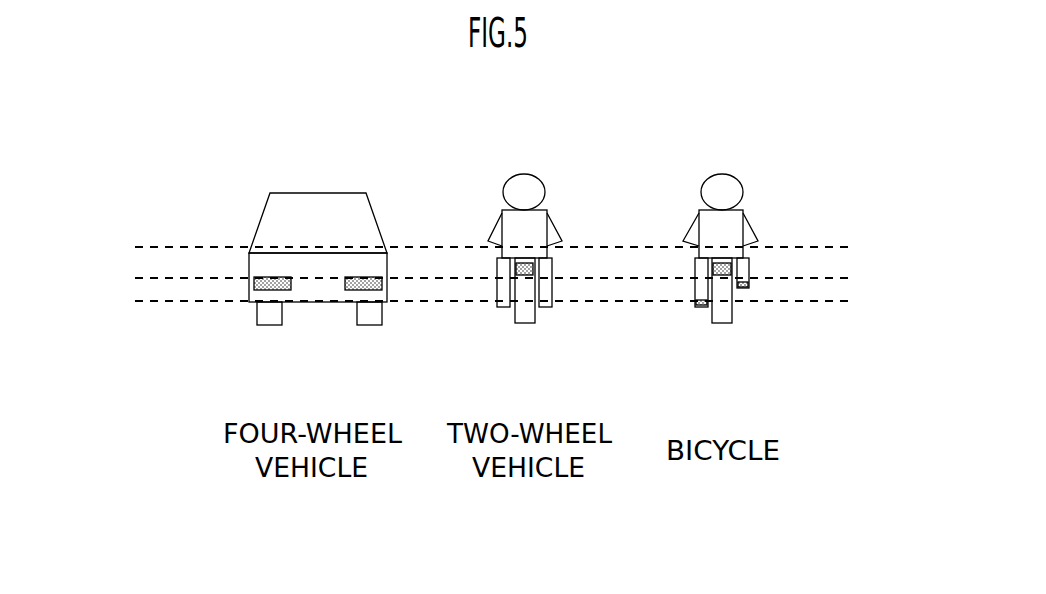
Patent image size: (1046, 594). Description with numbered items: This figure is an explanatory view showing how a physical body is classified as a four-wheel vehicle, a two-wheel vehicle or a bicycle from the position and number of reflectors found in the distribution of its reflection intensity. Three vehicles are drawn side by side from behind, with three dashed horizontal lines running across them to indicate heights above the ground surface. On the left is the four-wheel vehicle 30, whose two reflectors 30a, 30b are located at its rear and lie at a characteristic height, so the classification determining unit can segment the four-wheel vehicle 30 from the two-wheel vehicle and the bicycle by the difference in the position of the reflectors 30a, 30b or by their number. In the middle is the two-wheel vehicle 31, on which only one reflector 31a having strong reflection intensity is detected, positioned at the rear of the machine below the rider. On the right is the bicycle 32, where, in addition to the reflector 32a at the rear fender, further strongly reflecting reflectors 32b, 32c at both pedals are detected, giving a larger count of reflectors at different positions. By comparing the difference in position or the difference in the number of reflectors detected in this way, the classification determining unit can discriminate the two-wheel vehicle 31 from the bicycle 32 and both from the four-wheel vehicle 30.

The four-wheel vehicle 30 is at (321, 205).
The reflector 30a is at (253, 289).
The reflector 30b is at (347, 288).
The two-wheel vehicle 31 is at (578, 227).
The reflector 31a is at (526, 275).
The bicycle 32 is at (772, 227).
The reflector at the rear fender 32a is at (722, 275).
The pedal reflector 32b is at (700, 306).
The pedal reflector 32c is at (743, 288).